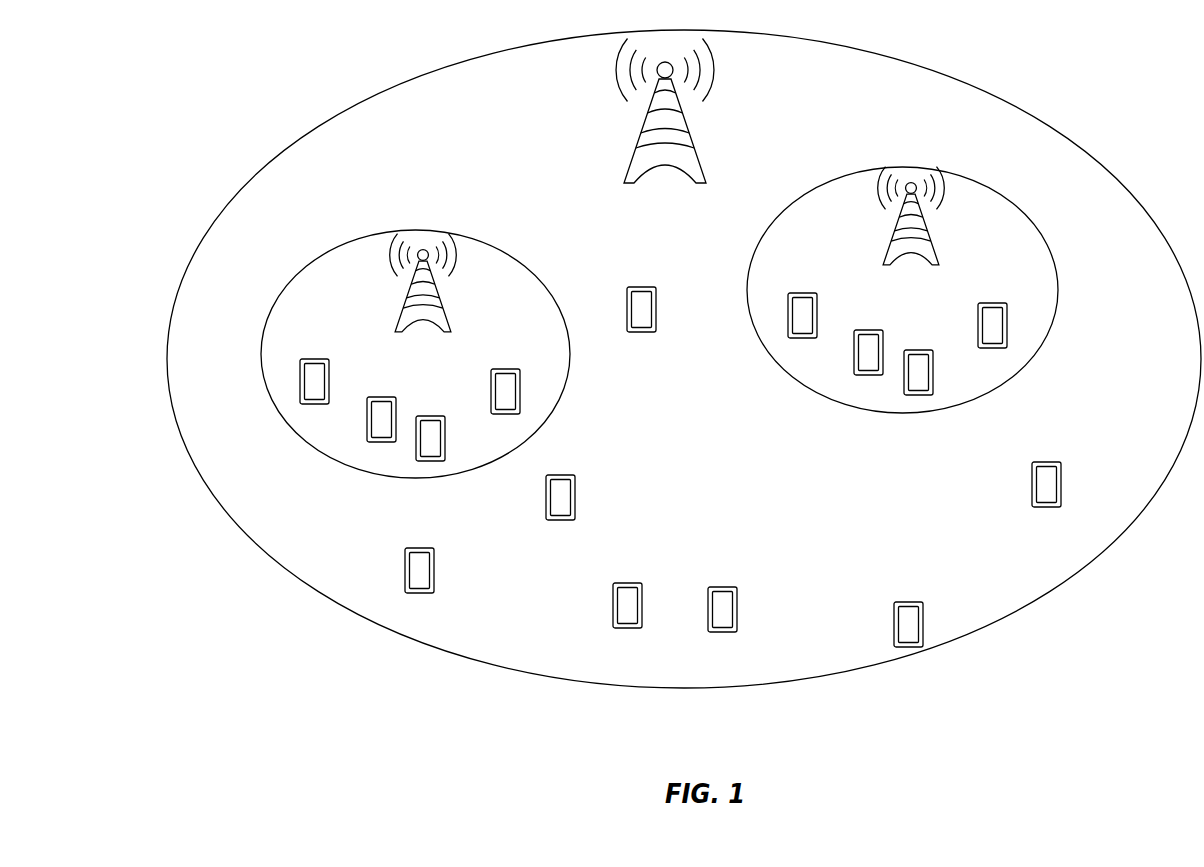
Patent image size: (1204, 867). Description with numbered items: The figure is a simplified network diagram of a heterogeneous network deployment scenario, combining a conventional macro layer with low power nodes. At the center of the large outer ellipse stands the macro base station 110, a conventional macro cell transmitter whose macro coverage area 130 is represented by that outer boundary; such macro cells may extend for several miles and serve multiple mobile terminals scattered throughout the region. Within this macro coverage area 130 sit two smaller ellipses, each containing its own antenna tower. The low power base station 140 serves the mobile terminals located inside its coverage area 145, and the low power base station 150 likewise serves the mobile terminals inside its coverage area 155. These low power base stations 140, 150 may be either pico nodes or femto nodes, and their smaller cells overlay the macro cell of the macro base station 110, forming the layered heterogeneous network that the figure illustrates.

The macro base station 110 is at (703, 172).
The macro coverage area 130 is at (1043, 597).
The low power base station 140 is at (450, 322).
The coverage area 145 is at (328, 457).
The low power base station 150 is at (935, 255).
The coverage area 155 is at (835, 401).